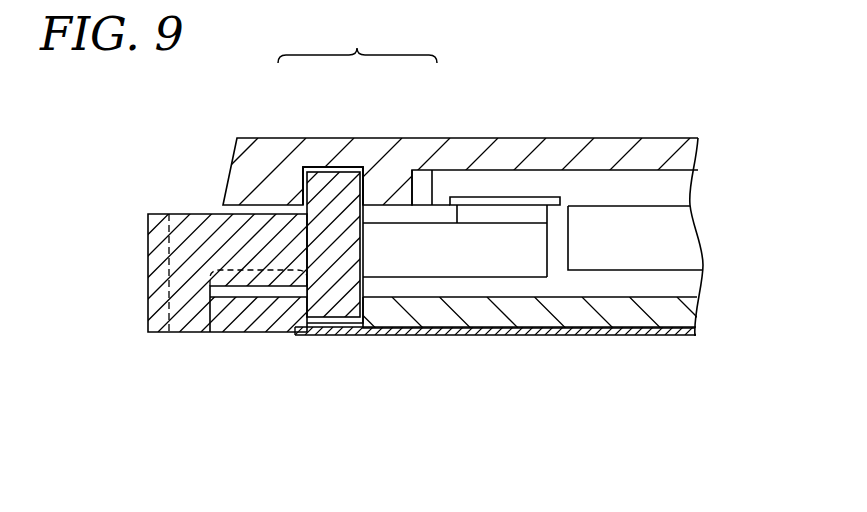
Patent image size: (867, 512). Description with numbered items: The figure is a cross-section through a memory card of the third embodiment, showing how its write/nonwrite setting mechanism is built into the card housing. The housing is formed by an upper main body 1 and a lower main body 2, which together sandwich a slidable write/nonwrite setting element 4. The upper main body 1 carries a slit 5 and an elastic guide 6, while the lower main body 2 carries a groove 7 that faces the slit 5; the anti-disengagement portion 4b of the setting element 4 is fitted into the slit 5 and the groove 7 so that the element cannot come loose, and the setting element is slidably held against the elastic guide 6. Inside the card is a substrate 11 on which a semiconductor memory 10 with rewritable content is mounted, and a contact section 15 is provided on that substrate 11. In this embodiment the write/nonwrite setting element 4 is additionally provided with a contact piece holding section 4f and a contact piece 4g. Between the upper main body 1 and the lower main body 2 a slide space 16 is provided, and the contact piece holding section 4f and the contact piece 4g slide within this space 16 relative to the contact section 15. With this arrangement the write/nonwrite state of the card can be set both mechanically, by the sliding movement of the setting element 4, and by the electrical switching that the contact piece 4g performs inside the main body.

The upper main body 1 is at (688, 312).
The lower main body 2 is at (685, 157).
The write/nonwrite setting element 4 is at (412, 144).
The anti-disengagement portion 4b is at (320, 175).
The contact piece holding section 4f is at (383, 235).
The contact piece 4g is at (470, 213).
The slit 5 is at (330, 310).
The elastic guide 6 is at (240, 322).
The groove 7 is at (338, 172).
The semiconductor memory 10 is at (610, 250).
The substrate 11 is at (627, 187).
The contact section 15 is at (497, 200).
The slide space 16 is at (427, 290).